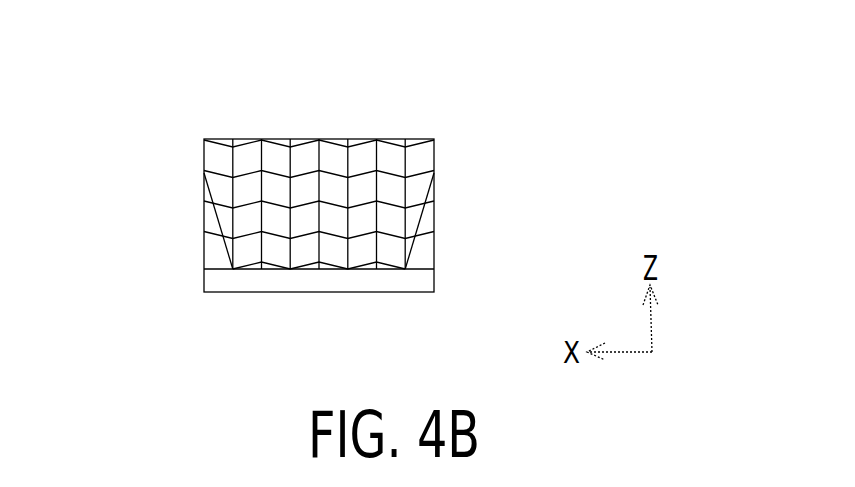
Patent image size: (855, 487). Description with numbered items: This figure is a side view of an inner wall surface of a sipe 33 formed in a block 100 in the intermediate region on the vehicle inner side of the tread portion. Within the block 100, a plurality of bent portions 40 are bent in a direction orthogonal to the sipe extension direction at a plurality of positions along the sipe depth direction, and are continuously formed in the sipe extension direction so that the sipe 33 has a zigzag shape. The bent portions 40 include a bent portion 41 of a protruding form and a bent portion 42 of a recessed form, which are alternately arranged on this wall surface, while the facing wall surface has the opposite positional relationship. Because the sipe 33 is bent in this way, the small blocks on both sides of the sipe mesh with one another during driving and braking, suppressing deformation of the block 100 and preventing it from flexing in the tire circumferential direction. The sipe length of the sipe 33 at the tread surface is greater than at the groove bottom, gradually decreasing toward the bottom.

The sipe 33 is at (321, 139).
The bent portions 40 is at (98, 143).
The bent portion of a protruding form 41 is at (218, 174).
The bent portion of a recessed form 42 is at (216, 212).
The block 100 is at (428, 235).